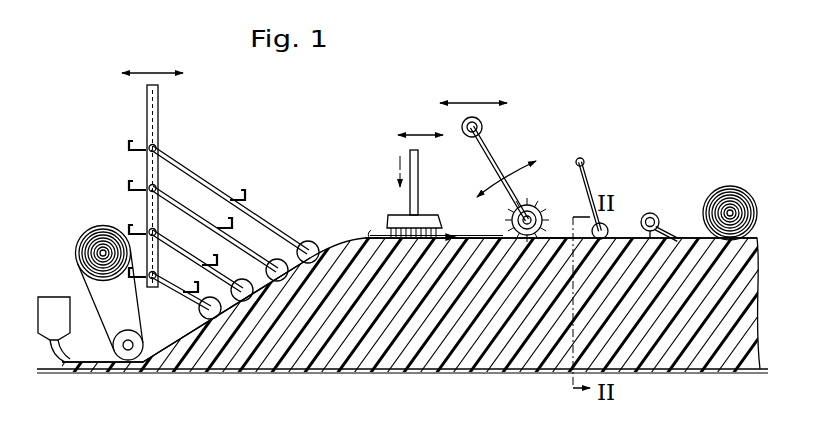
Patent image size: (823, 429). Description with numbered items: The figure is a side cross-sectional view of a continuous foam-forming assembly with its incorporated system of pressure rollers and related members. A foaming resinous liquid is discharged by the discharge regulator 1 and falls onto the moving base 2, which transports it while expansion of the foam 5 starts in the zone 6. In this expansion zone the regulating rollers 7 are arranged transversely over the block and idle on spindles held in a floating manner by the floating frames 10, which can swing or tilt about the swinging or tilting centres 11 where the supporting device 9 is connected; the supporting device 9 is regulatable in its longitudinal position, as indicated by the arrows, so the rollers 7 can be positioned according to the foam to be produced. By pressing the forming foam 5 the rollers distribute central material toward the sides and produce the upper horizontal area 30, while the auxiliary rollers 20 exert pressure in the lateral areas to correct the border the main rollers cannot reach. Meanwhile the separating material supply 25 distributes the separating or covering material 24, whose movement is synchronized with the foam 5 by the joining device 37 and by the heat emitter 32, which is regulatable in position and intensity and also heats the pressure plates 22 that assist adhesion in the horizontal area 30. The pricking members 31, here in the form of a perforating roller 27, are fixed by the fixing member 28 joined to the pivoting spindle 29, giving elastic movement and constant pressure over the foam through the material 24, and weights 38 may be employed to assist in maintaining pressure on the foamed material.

The discharge regulator 1 is at (55, 305).
The moving base 2 is at (281, 370).
The foam 5 is at (385, 333).
The zone where expansion starts 6 is at (177, 333).
The regulating rollers 7 is at (250, 288).
The supporting device 9 is at (153, 112).
The floating frames 10 is at (229, 223).
The swinging or tilting centres 11 is at (146, 150).
The auxiliary rollers 20 is at (610, 222).
The pressure plates 22 is at (378, 236).
The separating or covering material 24 is at (98, 363).
The separating material supply 25 is at (101, 228).
The perforating roller 27 is at (533, 204).
The fixing member 28 is at (500, 172).
The pivoting spindle 29 is at (466, 120).
The upper horizontal area 30 is at (558, 238).
The pricking members 31 is at (508, 218).
The heat emitter 32 is at (394, 214).
The joining device 37 is at (648, 213).
The weights 38 is at (240, 198).